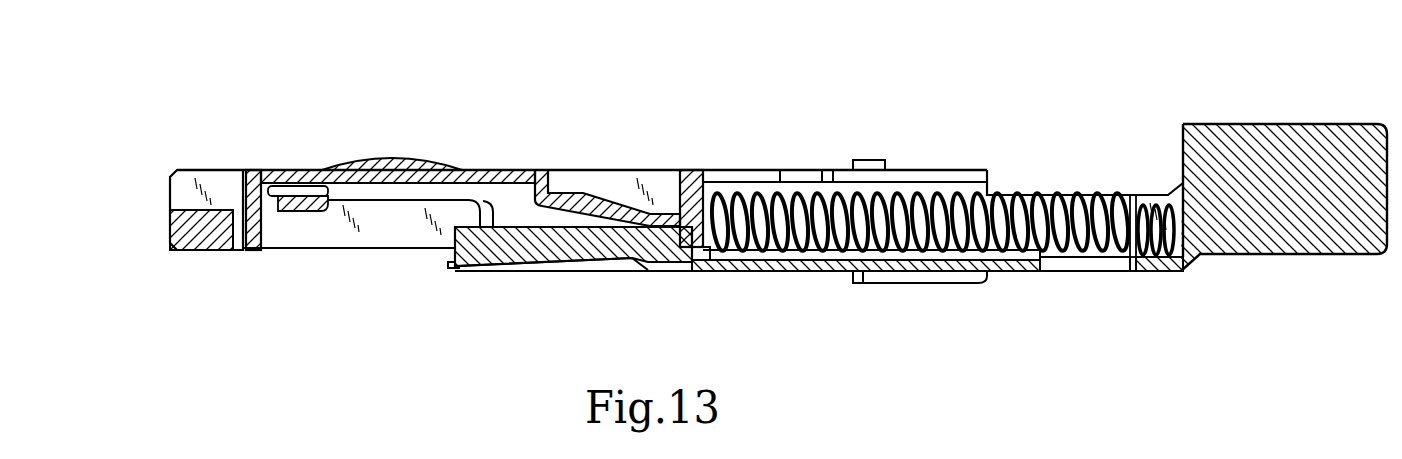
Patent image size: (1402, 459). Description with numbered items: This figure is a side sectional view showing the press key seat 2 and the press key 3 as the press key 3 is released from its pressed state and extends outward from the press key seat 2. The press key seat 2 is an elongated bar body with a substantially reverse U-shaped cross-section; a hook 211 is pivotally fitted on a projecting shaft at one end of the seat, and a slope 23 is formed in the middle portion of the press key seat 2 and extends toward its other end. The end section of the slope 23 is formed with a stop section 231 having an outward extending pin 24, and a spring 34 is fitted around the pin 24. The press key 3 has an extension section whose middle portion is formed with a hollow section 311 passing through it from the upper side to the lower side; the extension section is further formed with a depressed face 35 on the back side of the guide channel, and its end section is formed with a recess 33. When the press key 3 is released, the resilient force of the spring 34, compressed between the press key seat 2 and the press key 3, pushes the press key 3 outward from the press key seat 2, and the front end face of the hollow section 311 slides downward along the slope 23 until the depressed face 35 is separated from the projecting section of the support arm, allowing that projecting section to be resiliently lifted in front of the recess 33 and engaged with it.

The press key seat 2 is at (280, 163).
The hook 211 is at (488, 168).
The slope 23 is at (583, 217).
The stop section 231 is at (697, 233).
The pin 24 is at (758, 215).
The press key 3 is at (1220, 131).
The recess 33 is at (448, 257).
The spring 34 is at (1027, 193).
The depressed face 35 is at (590, 267).
The hollow section 311 is at (1080, 263).